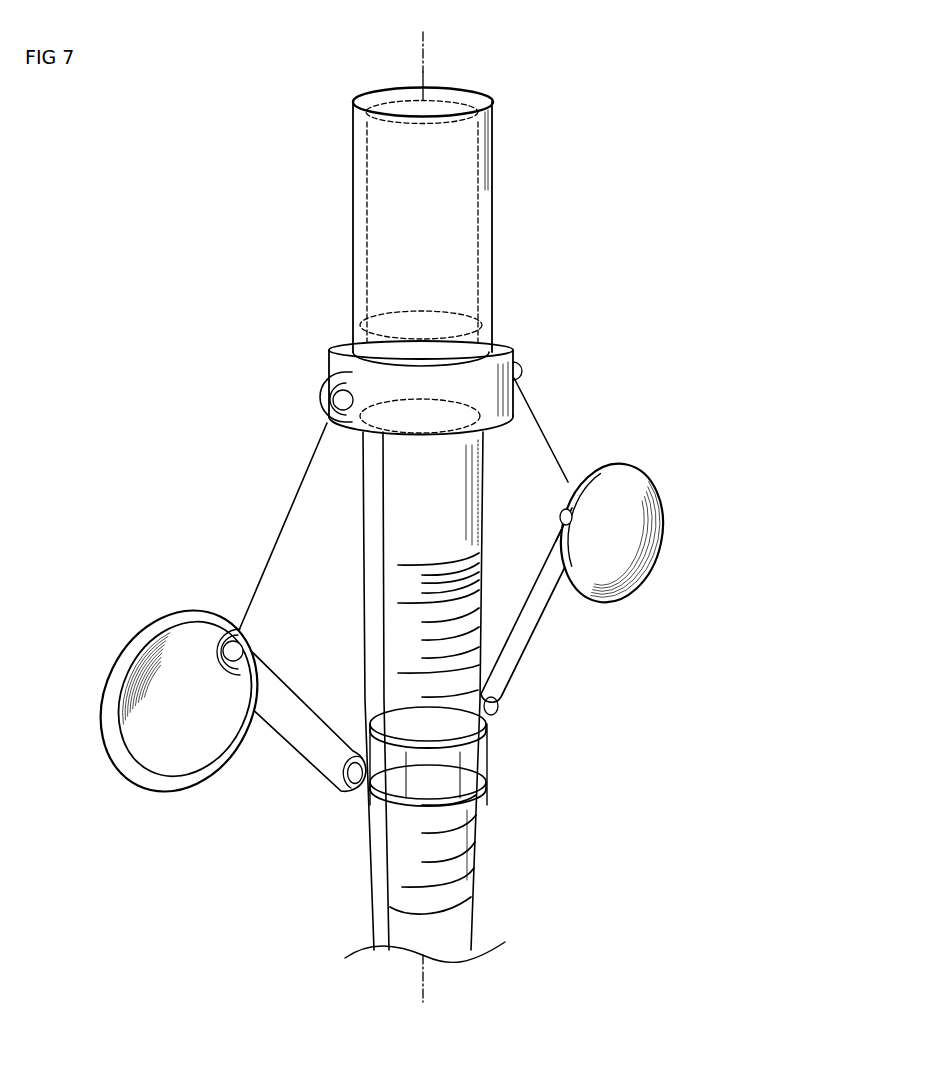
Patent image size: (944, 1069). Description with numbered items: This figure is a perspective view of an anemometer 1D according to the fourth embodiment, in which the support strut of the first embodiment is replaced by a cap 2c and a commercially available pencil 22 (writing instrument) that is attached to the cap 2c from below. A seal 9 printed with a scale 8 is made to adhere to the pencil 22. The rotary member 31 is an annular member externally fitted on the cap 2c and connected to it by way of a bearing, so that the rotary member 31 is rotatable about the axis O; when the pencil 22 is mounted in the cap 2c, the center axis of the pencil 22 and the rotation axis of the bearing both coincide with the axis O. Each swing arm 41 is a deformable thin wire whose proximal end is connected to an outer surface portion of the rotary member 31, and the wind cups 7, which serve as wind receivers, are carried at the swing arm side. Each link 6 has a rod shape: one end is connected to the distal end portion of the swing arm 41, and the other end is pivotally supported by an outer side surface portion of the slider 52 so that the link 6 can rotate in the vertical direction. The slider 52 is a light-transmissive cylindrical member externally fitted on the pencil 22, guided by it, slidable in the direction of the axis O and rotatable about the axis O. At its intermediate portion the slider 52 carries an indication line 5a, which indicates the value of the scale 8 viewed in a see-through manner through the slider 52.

The anemometer 1D is at (479, 44).
The axis O is at (421, 62).
The cap 2c is at (490, 238).
The rotary member 31 is at (343, 348).
The swing arm 41 is at (290, 495).
The wind cup 7 is at (132, 640).
The link 6 is at (318, 740).
The seal 9 is at (395, 547).
The scale 8 is at (400, 612).
The slider 52 is at (363, 715).
The indication line 5a is at (372, 806).
The pencil 22 is at (383, 925).